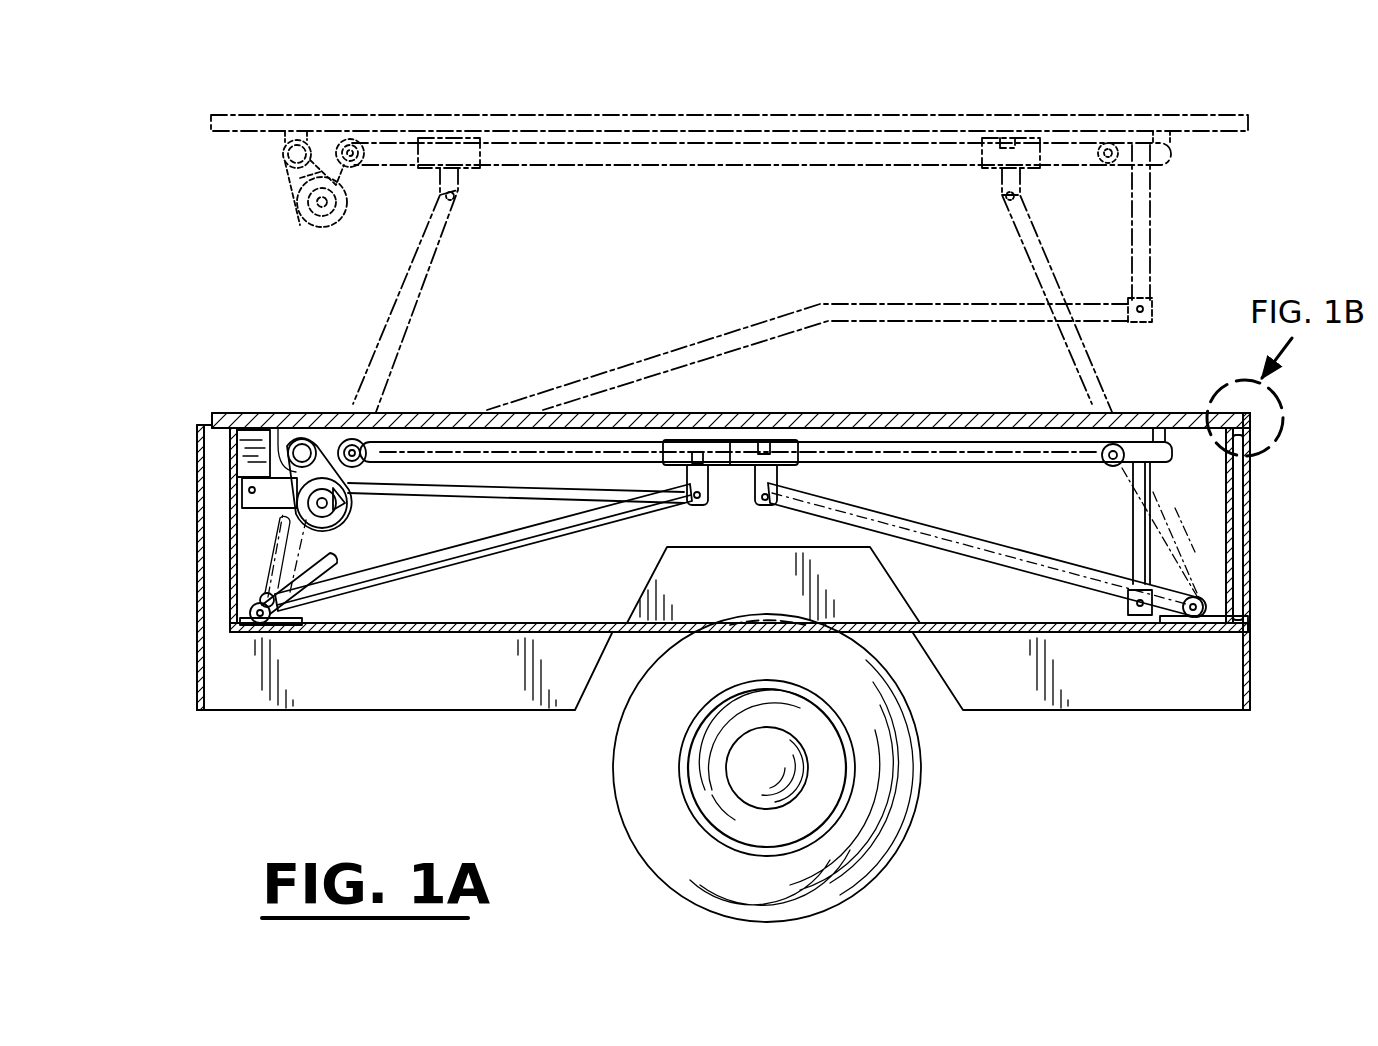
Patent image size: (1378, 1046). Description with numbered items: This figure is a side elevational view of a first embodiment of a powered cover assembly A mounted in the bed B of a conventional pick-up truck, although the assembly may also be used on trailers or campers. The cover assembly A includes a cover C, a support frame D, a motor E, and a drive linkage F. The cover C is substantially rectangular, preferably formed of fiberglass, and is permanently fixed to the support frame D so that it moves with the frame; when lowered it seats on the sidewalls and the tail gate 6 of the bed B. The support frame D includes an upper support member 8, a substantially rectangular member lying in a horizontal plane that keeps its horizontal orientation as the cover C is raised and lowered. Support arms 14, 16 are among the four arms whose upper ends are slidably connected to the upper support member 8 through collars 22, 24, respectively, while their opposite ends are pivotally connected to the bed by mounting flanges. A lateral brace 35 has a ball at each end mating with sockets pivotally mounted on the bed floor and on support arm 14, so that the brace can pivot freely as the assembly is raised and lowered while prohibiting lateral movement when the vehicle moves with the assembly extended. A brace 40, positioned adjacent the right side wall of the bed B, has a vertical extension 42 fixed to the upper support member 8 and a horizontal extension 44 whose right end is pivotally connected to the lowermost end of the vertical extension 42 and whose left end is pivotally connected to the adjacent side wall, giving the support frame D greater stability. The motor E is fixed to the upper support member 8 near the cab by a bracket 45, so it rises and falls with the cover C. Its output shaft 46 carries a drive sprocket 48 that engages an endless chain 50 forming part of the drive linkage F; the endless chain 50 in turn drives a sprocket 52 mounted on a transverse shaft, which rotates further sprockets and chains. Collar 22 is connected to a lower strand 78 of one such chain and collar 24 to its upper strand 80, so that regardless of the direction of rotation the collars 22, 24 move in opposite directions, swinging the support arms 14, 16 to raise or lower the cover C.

The cover assembly A is at (612, 100).
The bed B is at (1255, 587).
The cover C is at (937, 110).
The support frame D is at (1155, 215).
The motor E is at (305, 220).
The drive linkage F is at (548, 168).
The tail gate 6 is at (1255, 527).
The upper support member 8 is at (1175, 160).
The support arm 14 is at (388, 320).
The support arm 16 is at (985, 535).
The collar 22 is at (715, 432).
The collar 24 is at (798, 470).
The lateral brace 35 is at (262, 575).
The brace 40 is at (1152, 252).
The vertical extension 42 is at (1130, 255).
The horizontal extension 44 is at (887, 300).
The bracket 45 is at (287, 410).
The output shaft 46 is at (358, 518).
The drive sprocket 48 is at (405, 510).
The endless chain 50 is at (440, 405).
The sprocket 52 is at (390, 415).
The lower strand 78 is at (660, 470).
The upper strand 80 is at (770, 432).